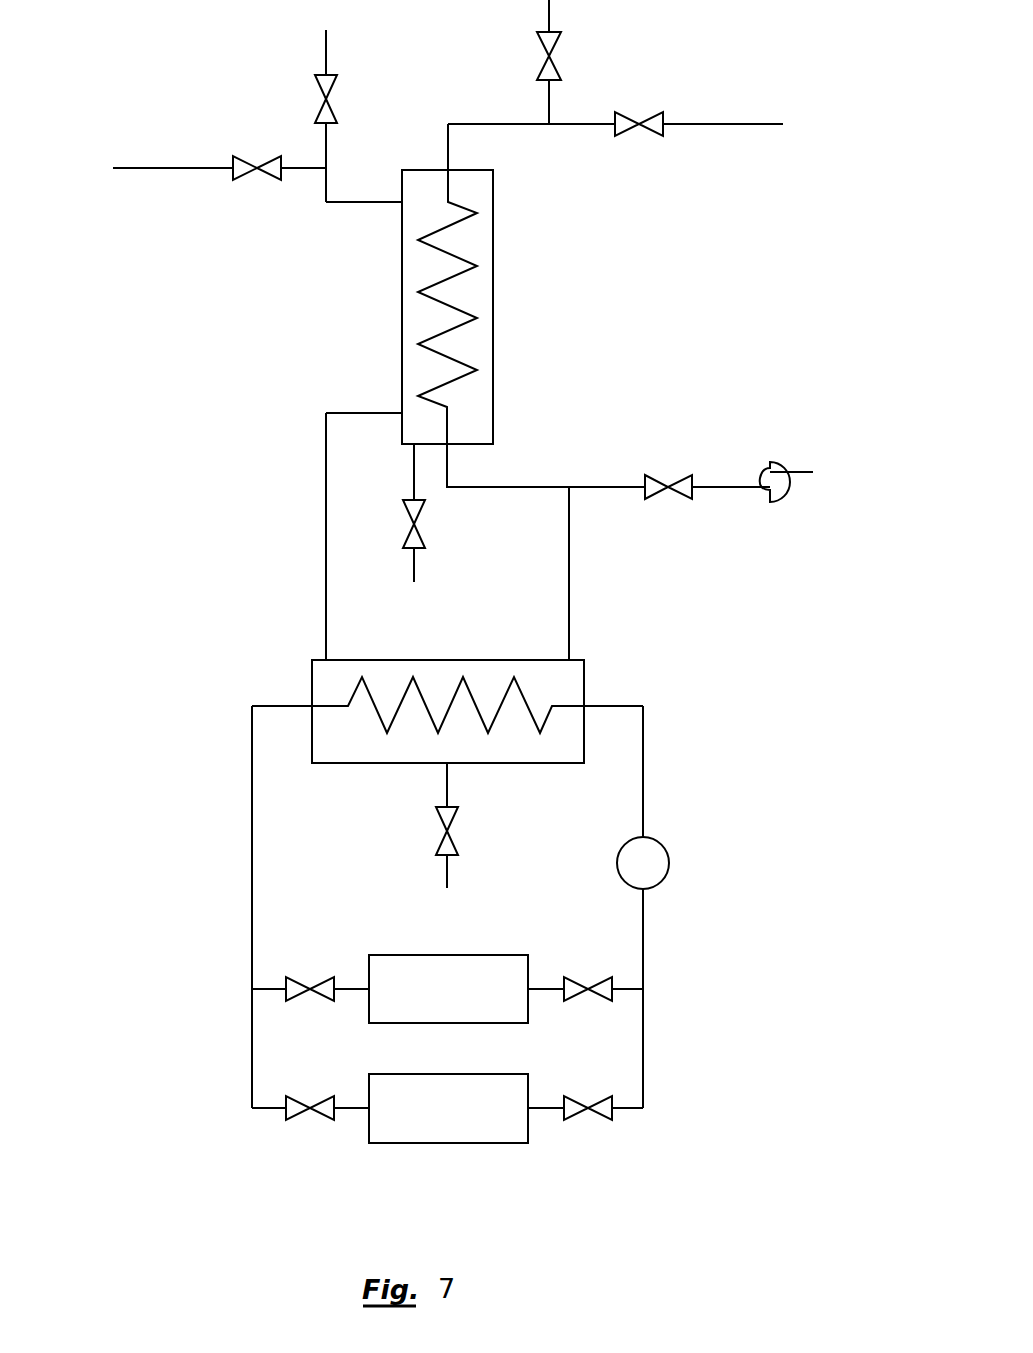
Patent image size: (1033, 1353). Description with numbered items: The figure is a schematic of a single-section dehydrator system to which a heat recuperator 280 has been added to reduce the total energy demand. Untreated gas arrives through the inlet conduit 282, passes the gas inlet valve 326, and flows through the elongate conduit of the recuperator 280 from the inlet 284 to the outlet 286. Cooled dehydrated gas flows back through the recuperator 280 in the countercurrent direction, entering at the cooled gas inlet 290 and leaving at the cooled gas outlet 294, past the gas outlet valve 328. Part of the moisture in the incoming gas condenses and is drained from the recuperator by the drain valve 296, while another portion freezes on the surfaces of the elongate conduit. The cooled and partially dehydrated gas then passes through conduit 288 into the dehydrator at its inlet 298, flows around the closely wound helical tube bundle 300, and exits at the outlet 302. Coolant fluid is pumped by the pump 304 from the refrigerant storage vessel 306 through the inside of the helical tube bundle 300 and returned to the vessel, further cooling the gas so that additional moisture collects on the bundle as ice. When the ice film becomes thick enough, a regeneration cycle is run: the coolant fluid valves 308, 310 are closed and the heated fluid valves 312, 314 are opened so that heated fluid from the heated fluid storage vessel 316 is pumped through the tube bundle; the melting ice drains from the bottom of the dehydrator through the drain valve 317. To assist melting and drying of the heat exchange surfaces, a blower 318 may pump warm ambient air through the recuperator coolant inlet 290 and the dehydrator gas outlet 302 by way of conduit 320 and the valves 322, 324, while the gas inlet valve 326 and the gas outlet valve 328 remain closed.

The heat recuperator 280 is at (445, 293).
The inlet conduit 282 is at (326, 40).
The inlet of the recuperator 284 is at (402, 205).
The outlet of the recuperator 286 is at (400, 412).
The conduit 288 is at (326, 510).
The cooled gas inlet 290 is at (449, 449).
The cooled gas outlet 294 is at (449, 168).
The drain valve 296 is at (417, 527).
The dehydrator inlet 298 is at (330, 660).
The helical tube bundle 300 is at (468, 692).
The dehydrator outlet 302 is at (572, 660).
The pump 304 is at (667, 859).
The refrigerant storage vessel 306 is at (476, 1003).
The coolant fluid valve 308 is at (313, 992).
The coolant fluid valve 310 is at (578, 986).
The heated fluid valve 312 is at (578, 1105).
The heated fluid valve 314 is at (313, 1112).
The heated fluid storage vessel 316 is at (476, 1122).
The valve 317 is at (451, 836).
The blower 318 is at (770, 466).
The conduit 320 is at (571, 128).
The valve 322 is at (255, 158).
The valve 324 is at (645, 138).
The gas inlet valve 326 is at (332, 92).
The gas outlet valve 328 is at (555, 45).